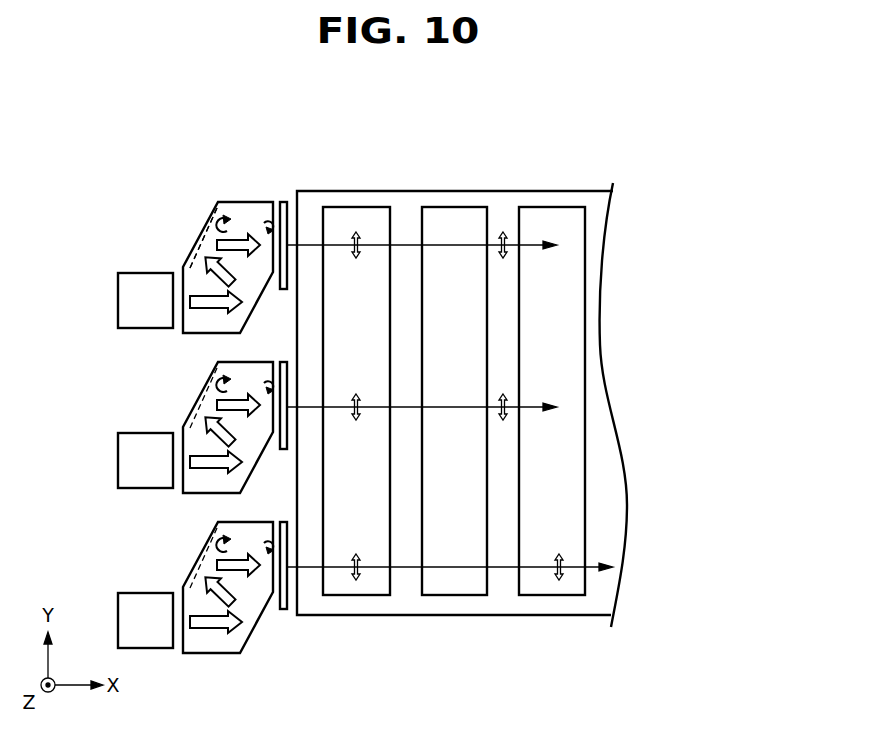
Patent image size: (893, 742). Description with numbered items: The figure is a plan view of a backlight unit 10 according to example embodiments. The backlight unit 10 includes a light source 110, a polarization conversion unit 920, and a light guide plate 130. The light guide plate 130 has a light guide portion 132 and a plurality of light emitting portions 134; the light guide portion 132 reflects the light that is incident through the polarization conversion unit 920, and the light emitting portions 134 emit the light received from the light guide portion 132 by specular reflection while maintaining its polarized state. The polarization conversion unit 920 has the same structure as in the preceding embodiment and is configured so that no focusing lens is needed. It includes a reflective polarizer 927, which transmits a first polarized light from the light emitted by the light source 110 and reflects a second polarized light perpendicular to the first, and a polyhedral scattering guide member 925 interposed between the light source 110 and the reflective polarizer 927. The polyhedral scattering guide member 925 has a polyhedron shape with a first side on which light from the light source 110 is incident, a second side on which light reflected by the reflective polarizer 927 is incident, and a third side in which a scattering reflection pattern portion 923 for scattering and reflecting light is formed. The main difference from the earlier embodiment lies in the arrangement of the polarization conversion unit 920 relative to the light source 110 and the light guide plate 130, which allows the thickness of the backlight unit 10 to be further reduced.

The backlight unit 10 is at (650, 157).
The light source 110 is at (127, 300).
The light guide plate 130 is at (454, 348).
The light guide portion 132 is at (493, 212).
The light emitting portion 134 is at (552, 370).
The polarization conversion unit 920 is at (235, 217).
The scattering reflection pattern portion 923 is at (198, 238).
The polyhedral scattering guide member 925 is at (248, 200).
The reflective polarizer 927 is at (298, 219).